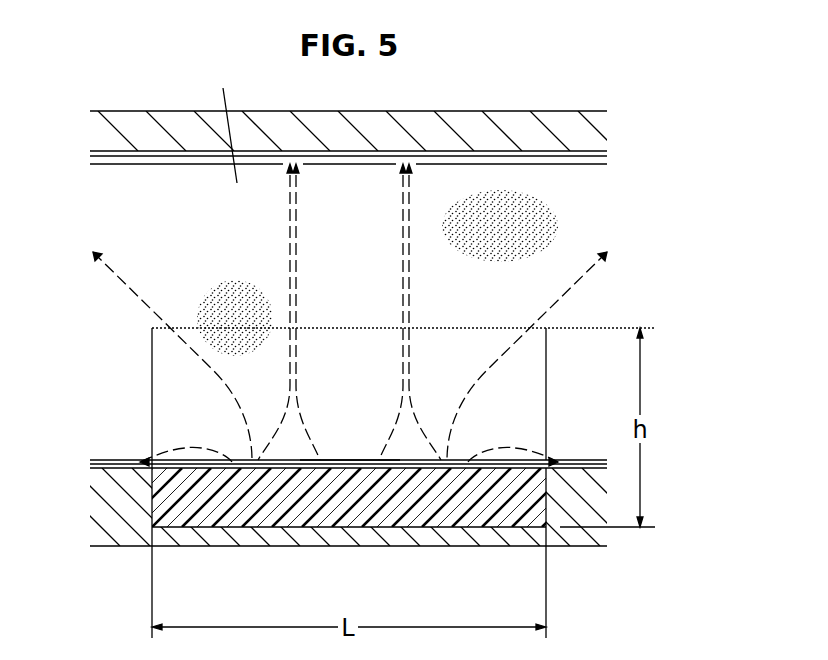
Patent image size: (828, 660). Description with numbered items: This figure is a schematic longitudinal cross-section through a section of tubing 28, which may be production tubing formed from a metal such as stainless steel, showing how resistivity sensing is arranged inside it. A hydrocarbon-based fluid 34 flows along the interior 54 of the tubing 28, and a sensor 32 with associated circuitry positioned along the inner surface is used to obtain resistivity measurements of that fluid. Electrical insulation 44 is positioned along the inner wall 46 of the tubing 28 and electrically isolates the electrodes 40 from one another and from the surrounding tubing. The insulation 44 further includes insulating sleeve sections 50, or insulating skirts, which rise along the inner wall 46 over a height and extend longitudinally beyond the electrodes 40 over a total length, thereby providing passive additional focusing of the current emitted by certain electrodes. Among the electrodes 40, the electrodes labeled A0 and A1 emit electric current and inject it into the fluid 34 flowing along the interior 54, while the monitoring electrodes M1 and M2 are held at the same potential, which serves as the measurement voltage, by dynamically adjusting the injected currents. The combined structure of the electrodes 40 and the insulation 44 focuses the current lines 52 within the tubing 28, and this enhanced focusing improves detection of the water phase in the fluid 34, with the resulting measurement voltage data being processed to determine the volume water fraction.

The tubing 28 is at (168, 111).
The interior of tubing 54 is at (224, 123).
The inner wall of tubing 46 is at (498, 157).
The fluid 34 is at (486, 240).
The current lines 52 is at (133, 291).
The insulating sleeve sections 50 is at (151, 395).
The electrical insulation 44 is at (483, 509).
The sensor 32 is at (353, 455).
The electrodes 40 is at (367, 474).
The emitting electrode A1 is at (245, 470).
The monitoring electrode M2 is at (287, 470).
The monitoring electrode M1 is at (310, 470).
The emitting electrode A0 is at (342, 472).